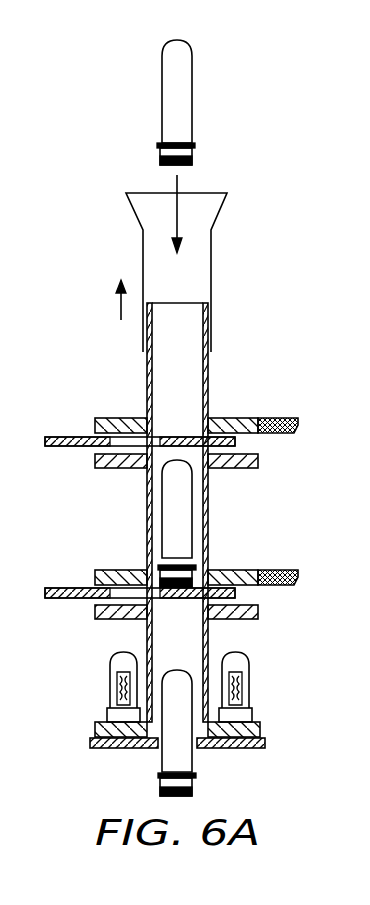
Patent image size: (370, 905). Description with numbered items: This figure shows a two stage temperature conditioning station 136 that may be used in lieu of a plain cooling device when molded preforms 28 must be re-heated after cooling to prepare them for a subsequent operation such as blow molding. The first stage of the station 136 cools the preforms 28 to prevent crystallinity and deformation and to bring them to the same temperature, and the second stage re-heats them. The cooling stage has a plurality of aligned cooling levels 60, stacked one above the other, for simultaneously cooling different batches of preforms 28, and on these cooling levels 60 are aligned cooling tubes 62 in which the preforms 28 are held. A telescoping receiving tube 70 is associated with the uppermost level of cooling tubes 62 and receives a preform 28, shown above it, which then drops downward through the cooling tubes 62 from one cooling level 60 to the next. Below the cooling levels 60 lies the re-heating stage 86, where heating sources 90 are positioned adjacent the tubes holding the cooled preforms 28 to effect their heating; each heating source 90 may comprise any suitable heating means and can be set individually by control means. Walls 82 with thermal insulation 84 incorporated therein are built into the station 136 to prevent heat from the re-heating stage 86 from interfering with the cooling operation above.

The preform 28 is at (192, 88).
The telescoping receiving tube 70 is at (212, 260).
The cooling tube 62 is at (208, 398).
The two stage temperature conditioning station 136 is at (296, 206).
The cooling level 60 is at (67, 375).
The re-heating stage 86 is at (67, 710).
The heating source 90 is at (249, 683).
The wall 82 is at (361, 348).
The thermal insulation 84 is at (369, 553).